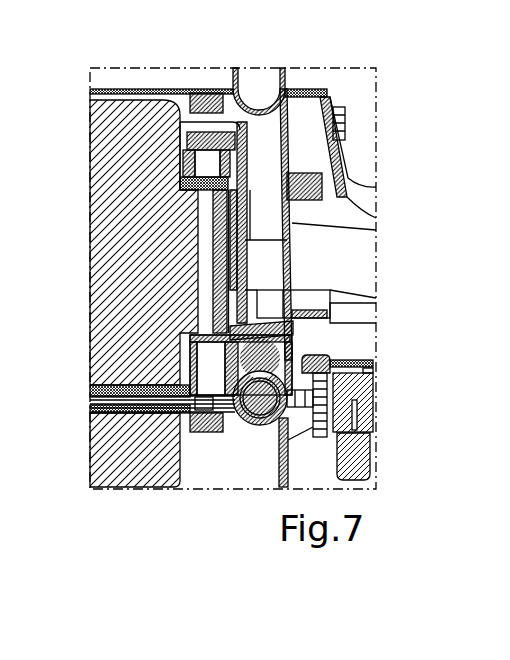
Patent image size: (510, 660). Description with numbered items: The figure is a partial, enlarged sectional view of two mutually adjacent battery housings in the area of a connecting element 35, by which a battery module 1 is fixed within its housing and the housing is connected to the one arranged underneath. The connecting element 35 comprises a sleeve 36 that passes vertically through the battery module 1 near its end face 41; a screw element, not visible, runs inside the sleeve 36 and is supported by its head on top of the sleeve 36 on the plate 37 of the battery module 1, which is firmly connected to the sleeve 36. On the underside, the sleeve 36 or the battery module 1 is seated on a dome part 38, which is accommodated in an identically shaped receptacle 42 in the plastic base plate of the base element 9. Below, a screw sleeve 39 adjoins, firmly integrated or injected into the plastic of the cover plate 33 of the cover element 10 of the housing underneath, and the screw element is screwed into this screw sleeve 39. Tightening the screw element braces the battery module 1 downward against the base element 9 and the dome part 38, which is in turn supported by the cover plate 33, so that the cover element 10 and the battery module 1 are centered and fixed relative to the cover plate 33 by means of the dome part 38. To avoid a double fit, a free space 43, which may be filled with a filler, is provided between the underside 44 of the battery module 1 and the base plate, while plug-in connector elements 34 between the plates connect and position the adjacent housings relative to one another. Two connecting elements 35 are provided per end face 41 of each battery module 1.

The battery module 1 is at (107, 264).
The base element 9 is at (395, 312).
The cover element 10 is at (395, 132).
The cover plate 33 is at (90, 93).
The plug-in connector elements 34 is at (92, 398).
The connecting element 35 is at (205, 163).
The sleeve 36 is at (200, 231).
The plate 37 is at (196, 178).
The dome part 38 is at (207, 372).
The screw sleeve 39 is at (203, 433).
The end face 41 is at (238, 267).
The receptacle 42 is at (190, 352).
The free space 43 is at (100, 388).
The underside 44 is at (122, 392).